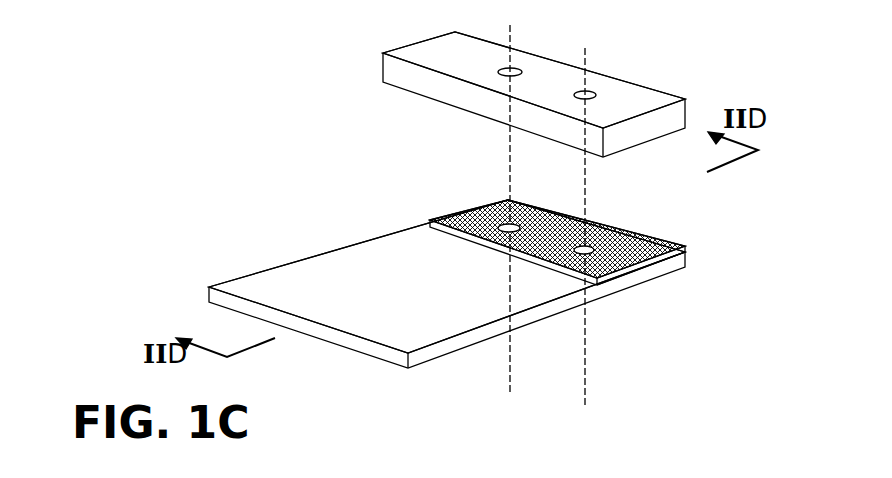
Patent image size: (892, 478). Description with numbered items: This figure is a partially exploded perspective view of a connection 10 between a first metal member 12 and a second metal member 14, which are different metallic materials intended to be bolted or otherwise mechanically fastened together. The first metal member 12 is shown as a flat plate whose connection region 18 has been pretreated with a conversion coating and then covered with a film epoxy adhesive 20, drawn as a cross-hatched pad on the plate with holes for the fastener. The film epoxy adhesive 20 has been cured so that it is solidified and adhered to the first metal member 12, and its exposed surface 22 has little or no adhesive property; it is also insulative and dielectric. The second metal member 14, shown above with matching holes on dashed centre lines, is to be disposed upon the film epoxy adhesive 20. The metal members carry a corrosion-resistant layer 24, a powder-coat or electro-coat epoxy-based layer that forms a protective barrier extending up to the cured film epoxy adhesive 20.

The connection 10 is at (290, 144).
The first metal member 12 is at (450, 328).
The second metal member 14 is at (648, 97).
The connection region 18 is at (660, 264).
The film epoxy adhesive 20 is at (613, 233).
The exposed surface 22 is at (462, 215).
The corrosion-resistant layer 24 is at (430, 52).